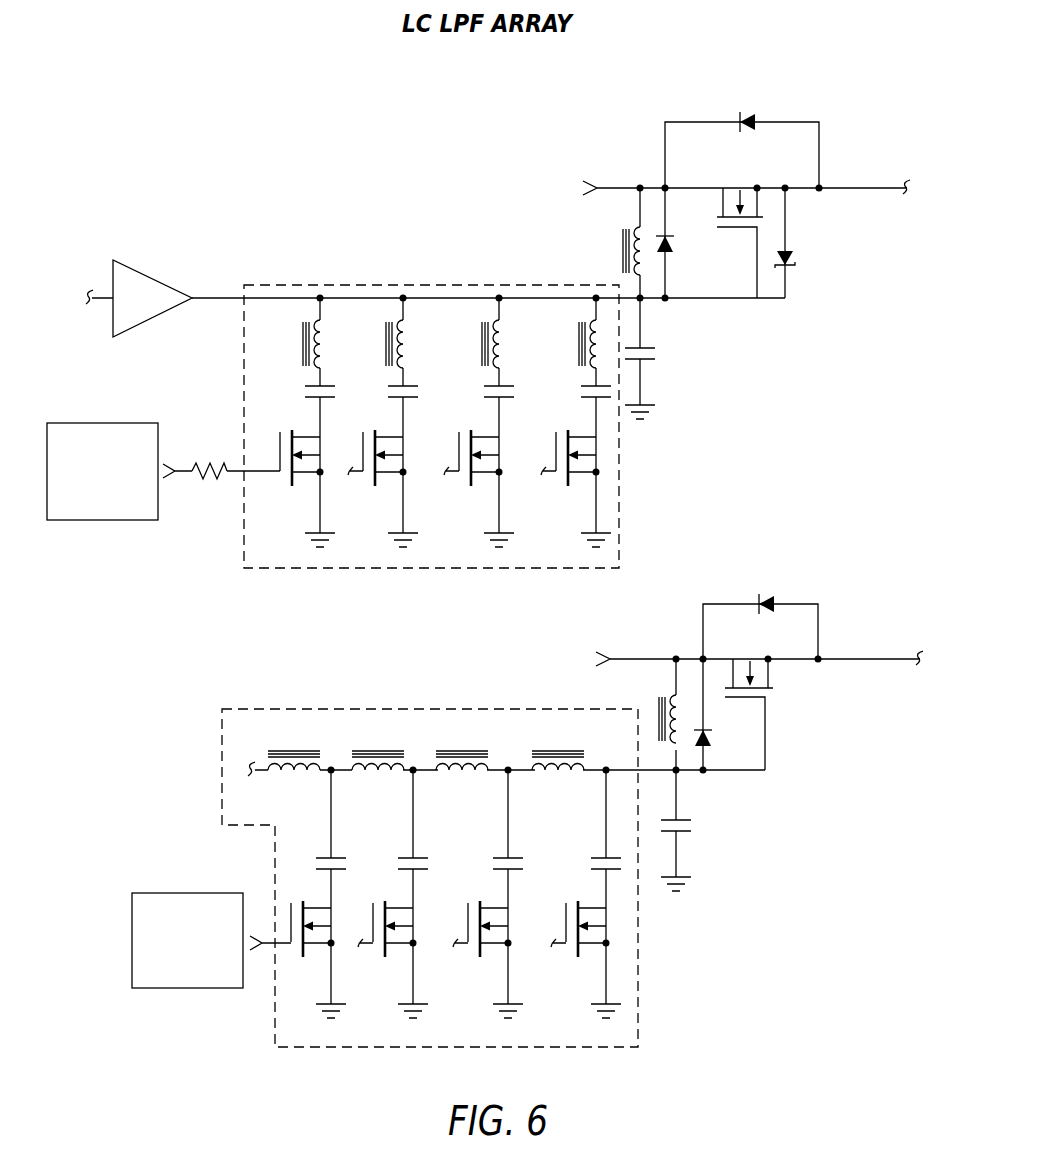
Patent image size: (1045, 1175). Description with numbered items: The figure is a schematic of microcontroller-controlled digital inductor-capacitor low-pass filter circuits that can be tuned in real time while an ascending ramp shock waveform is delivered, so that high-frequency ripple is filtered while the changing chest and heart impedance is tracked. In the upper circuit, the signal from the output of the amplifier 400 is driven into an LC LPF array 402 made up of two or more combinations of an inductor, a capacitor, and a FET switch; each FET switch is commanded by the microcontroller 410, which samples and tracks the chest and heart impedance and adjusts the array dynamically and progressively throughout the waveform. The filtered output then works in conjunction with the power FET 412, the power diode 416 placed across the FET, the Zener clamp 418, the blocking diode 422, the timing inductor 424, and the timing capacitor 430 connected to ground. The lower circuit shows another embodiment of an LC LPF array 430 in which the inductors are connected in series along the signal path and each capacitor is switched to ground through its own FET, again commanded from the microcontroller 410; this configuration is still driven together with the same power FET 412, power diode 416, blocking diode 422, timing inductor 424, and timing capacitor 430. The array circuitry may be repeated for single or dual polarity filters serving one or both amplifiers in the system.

The amplifier 400 is at (130, 263).
The LC LPF array 402 is at (303, 285).
The microcontroller 410 is at (118, 523).
The power FET 412 is at (764, 222).
The power diode 416 is at (747, 112).
The Zener clamp 418 is at (798, 255).
The blocking diode 422 is at (677, 246).
The timing inductor 424 is at (618, 253).
The timing capacitor 430 is at (658, 362).